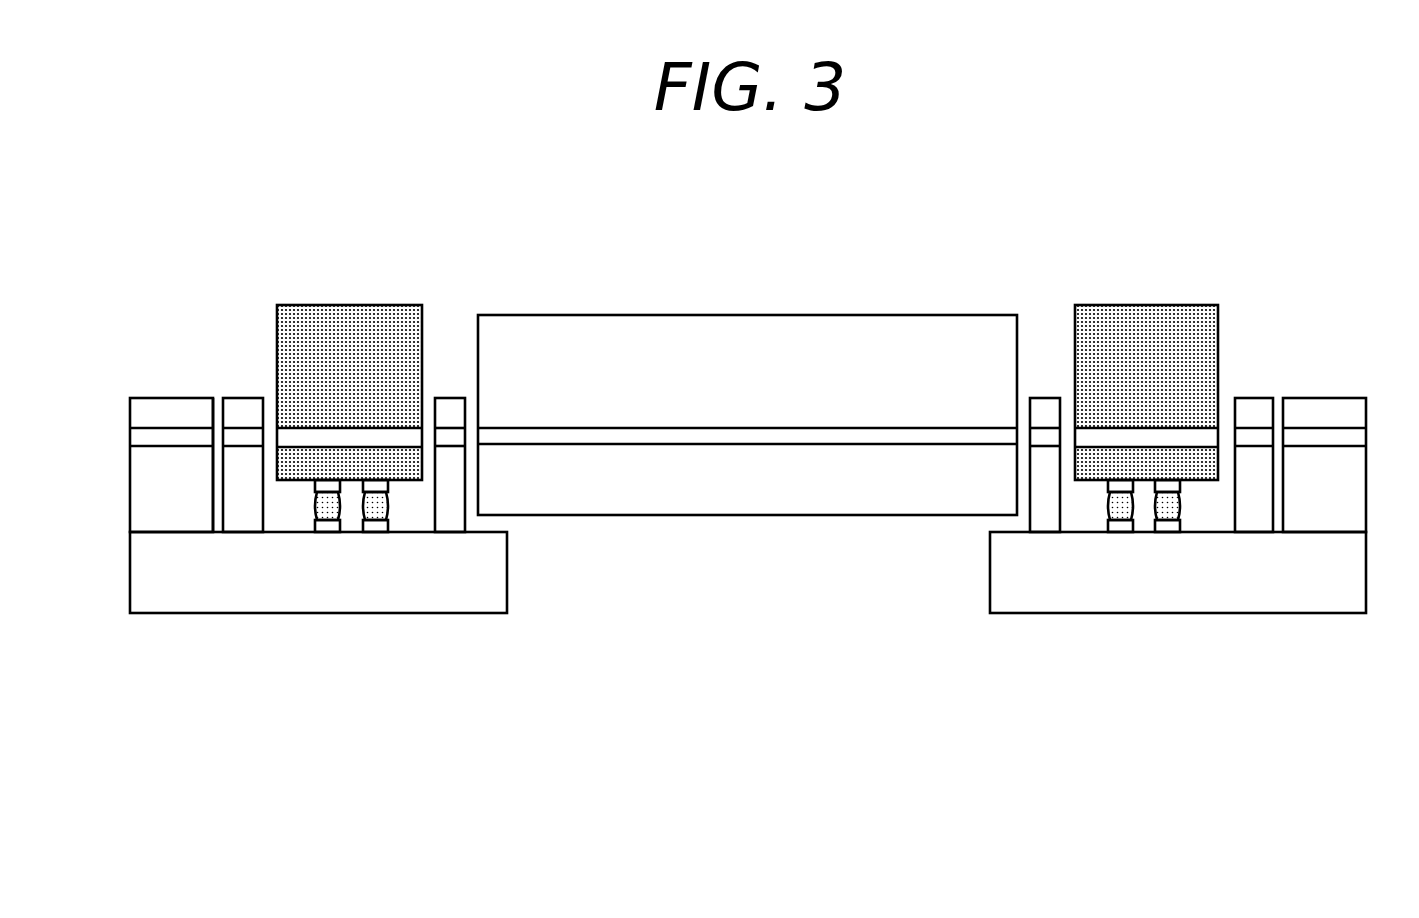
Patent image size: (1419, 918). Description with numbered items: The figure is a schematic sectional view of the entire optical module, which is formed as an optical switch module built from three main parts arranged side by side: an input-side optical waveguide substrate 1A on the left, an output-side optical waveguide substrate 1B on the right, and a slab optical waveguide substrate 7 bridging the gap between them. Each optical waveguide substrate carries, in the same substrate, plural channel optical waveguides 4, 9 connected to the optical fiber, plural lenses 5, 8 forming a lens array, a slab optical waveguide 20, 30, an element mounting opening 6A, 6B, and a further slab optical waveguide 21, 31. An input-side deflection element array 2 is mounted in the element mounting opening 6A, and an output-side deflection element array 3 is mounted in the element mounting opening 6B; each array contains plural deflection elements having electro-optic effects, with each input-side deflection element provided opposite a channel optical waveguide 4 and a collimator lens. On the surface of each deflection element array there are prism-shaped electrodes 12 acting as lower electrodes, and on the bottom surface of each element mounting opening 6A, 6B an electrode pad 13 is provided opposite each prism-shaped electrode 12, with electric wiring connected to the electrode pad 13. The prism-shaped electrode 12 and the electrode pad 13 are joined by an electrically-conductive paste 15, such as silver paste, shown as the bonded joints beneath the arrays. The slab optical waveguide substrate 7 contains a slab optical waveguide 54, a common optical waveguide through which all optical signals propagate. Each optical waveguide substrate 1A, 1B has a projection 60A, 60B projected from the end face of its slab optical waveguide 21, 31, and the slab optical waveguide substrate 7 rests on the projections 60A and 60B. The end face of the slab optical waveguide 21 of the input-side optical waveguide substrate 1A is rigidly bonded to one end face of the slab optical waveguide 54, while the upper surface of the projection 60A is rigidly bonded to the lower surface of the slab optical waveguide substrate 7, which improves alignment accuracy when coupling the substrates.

The input-side optical waveguide substrate 1A is at (152, 645).
The output-side optical waveguide substrate 1B is at (1293, 645).
The input-side deflection element array 2 is at (358, 303).
The output-side deflection element array 3 is at (1138, 303).
The channel optical waveguides 4 is at (156, 396).
The lenses 5 is at (216, 396).
The element mounting opening 6A is at (268, 397).
The element mounting opening 6B is at (1228, 397).
The slab optical waveguide substrate 7 is at (775, 312).
The lenses 8 is at (1280, 396).
The channel optical waveguides 9 is at (1340, 396).
The prism-shaped electrodes 12 is at (318, 487).
The electrode pad 13 is at (323, 527).
The electrically-conductive paste 15 is at (342, 510).
The slab optical waveguide 20 is at (240, 396).
The slab optical waveguide 21 is at (450, 396).
The slab optical waveguide 30 is at (1258, 396).
The slab optical waveguide 31 is at (1045, 396).
The slab optical waveguide 54 is at (728, 448).
The projection 60A is at (510, 576).
The projection 60B is at (986, 576).